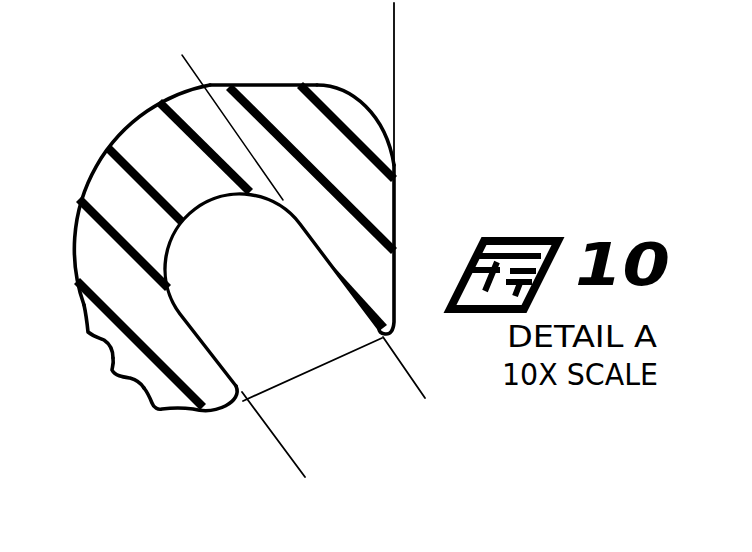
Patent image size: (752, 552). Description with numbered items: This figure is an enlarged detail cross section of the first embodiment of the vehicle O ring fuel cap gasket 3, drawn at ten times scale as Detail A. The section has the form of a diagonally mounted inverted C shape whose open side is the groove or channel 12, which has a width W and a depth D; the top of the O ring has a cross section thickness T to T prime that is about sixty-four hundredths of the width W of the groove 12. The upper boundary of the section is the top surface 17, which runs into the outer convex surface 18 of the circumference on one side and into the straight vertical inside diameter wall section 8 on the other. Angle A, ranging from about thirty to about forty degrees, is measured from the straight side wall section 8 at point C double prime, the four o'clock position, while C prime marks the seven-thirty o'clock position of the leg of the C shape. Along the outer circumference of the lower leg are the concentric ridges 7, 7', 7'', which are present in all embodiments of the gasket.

The vehicle O ring fuel cap gasket 3 is at (368, 110).
The ridge on outer circumference 7 is at (68, 331).
The ridge on outer circumference 7' is at (95, 378).
The ridge on outer circumference 7'' is at (165, 411).
The vertical inside diameter wall section 8 is at (397, 203).
The groove or channel 12 is at (296, 256).
The top surface 17 is at (288, 85).
The outer convex surface 18 is at (72, 233).